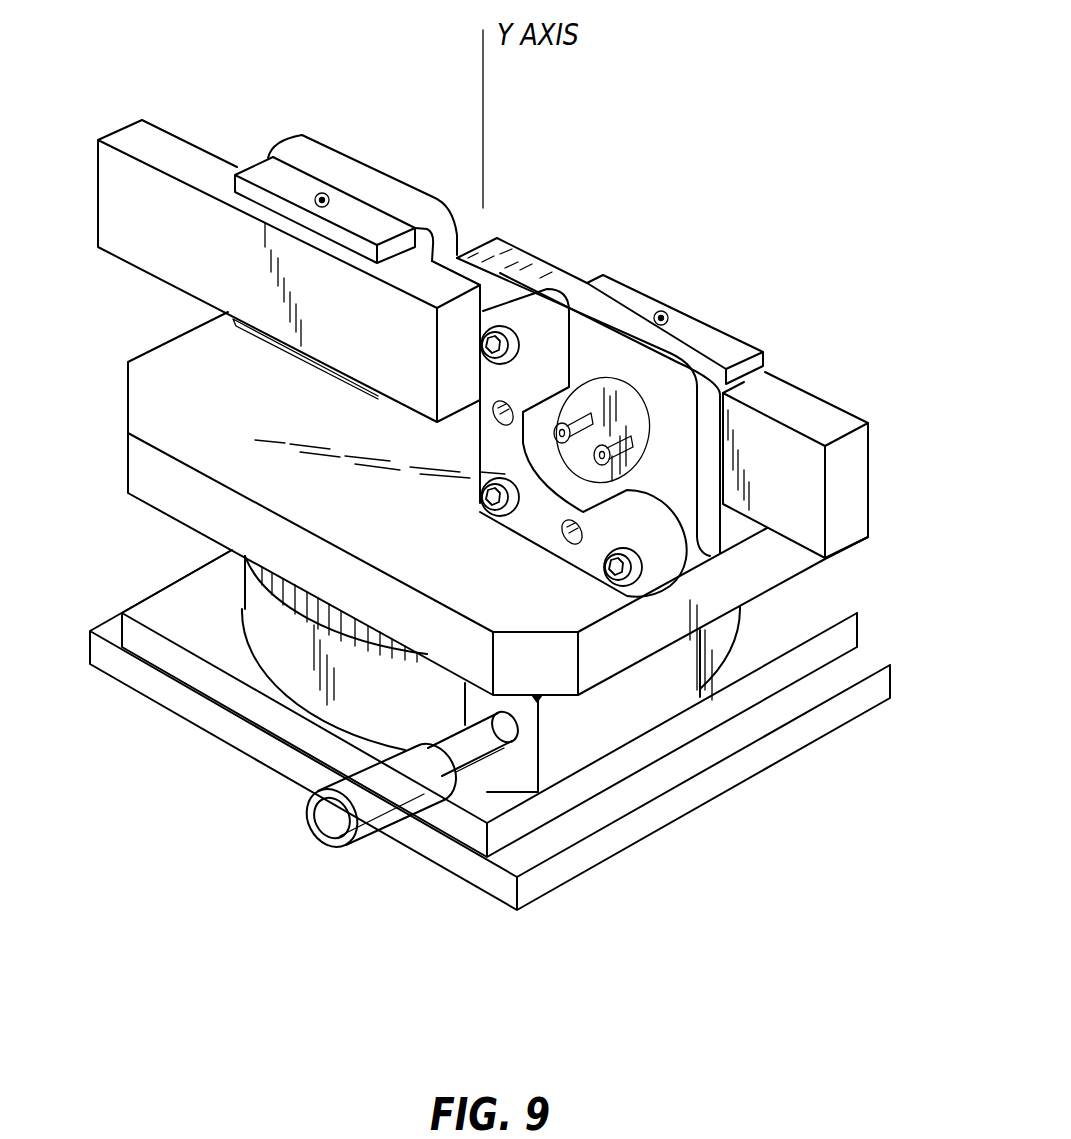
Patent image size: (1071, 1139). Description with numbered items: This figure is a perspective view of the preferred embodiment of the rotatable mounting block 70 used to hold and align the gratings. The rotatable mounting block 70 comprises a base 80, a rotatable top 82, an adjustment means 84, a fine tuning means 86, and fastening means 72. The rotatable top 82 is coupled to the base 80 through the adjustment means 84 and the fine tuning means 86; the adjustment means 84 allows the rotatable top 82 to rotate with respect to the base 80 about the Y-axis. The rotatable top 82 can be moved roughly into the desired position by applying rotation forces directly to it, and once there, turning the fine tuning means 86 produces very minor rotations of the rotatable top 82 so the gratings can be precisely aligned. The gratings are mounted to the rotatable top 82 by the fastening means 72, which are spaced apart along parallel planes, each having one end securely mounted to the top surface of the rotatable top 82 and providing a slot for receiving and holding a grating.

The rotatable mounting block 70 is at (648, 93).
The fastening means 72 is at (298, 133).
The base 80 is at (656, 808).
The rotatable top 82 is at (128, 424).
The adjustment means 84 is at (268, 650).
The fine tuning means 86 is at (314, 797).